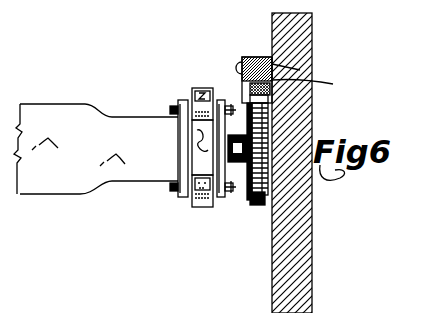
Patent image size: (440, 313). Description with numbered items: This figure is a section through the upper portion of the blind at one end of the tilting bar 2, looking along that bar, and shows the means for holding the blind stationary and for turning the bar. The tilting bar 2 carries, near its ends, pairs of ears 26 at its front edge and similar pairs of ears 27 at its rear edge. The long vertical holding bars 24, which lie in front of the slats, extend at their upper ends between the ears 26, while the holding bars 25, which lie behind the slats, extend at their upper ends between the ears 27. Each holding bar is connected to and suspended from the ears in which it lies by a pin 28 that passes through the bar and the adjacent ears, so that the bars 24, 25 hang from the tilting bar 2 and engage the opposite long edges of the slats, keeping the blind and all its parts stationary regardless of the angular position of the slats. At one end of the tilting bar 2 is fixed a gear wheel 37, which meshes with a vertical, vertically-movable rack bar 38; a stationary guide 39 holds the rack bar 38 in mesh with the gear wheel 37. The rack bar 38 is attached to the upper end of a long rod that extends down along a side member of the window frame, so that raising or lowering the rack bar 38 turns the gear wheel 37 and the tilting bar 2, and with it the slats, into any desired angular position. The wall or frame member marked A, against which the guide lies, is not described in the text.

The wall A is at (297, 28).
The tilting bar 2 is at (58, 116).
The holding bars 24 is at (203, 88).
The holding bars 25 is at (200, 207).
The ears 26 is at (181, 100).
The ears 27 is at (183, 197).
The pins 28 is at (178, 109).
The gear wheel 37 is at (255, 207).
The rack bar 38 is at (258, 66).
The stationary guide 39 is at (262, 57).